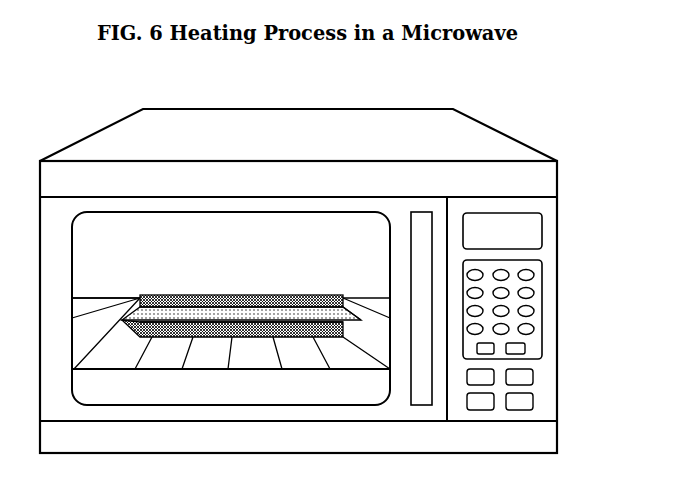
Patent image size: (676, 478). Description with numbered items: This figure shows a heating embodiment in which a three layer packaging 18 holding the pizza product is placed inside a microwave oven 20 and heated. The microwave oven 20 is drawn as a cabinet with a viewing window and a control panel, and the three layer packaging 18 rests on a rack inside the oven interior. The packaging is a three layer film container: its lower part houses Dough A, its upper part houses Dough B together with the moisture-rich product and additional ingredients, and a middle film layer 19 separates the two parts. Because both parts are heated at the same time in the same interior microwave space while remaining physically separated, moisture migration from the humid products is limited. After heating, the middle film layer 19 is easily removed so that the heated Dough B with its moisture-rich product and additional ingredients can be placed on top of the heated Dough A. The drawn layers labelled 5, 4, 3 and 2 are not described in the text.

The microwave oven 20 is at (471, 160).
The three layer packaging 18 is at (140, 294).
The middle film layer 19 is at (165, 322).
The top layer 5 is at (343, 295).
The tray / intermediate layer 4 is at (343, 303).
The second layer 3 is at (343, 313).
The bottom layer 2 is at (343, 330).